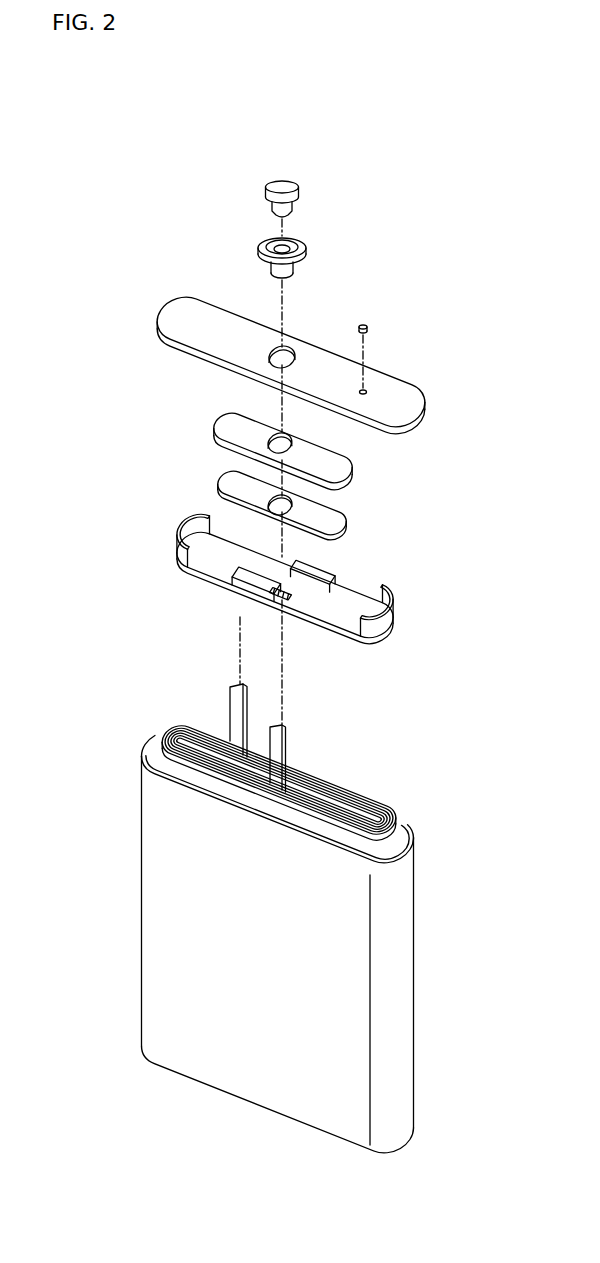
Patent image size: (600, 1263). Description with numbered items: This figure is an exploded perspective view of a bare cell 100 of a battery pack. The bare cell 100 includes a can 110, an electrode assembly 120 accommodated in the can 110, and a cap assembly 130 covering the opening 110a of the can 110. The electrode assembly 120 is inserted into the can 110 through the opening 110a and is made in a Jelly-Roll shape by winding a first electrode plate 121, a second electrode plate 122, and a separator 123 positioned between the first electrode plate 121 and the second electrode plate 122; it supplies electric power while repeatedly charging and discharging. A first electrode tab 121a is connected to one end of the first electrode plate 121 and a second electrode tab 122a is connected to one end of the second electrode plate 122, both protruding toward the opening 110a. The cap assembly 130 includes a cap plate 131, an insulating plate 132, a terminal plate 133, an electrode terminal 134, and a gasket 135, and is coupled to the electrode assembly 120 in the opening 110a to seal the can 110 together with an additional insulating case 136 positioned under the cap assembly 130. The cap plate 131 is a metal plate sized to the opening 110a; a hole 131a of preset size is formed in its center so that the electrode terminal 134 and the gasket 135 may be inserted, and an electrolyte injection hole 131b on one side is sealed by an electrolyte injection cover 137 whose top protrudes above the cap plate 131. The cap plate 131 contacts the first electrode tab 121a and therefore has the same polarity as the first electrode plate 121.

The bare cell 100 is at (101, 115).
The can 110 is at (158, 905).
The opening 110a is at (140, 757).
The electrode assembly 120 is at (372, 790).
The first electrode plate 121 is at (163, 734).
The first electrode tab 121a is at (233, 700).
The second electrode plate 122 is at (198, 742).
The second electrode tab 122a is at (284, 748).
The separator 123 is at (172, 737).
The cap assembly 130 is at (160, 287).
The cap plate 131 is at (404, 401).
The hole 131a is at (290, 352).
The electrolyte injection hole 131b is at (370, 387).
The insulating plate 132 is at (342, 462).
The terminal plate 133 is at (338, 526).
The electrode terminal 134 is at (288, 184).
The gasket 135 is at (302, 244).
The insulating case 136 is at (388, 637).
The electrolyte injection cover 137 is at (369, 325).